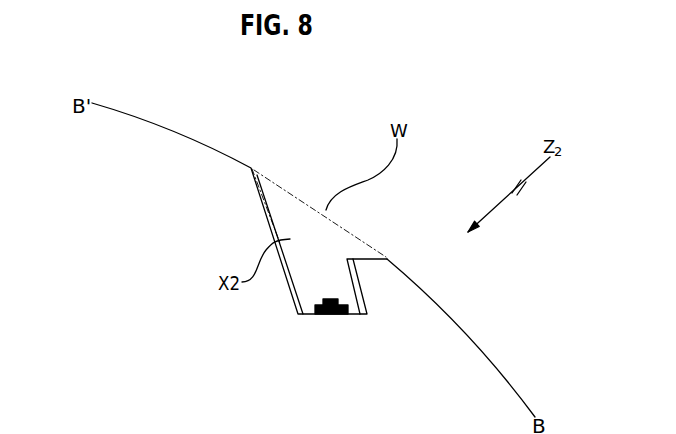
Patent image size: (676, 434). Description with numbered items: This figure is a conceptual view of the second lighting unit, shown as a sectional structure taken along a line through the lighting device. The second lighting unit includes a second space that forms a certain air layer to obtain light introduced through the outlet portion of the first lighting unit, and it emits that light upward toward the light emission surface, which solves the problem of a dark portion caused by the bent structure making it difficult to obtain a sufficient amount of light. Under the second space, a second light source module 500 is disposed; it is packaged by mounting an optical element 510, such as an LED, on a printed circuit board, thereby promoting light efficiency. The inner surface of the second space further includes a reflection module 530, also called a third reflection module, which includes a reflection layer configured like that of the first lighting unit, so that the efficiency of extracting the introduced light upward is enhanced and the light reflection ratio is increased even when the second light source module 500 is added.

The second light source module 500 is at (309, 344).
The optical element 510 is at (318, 301).
The reflection module 530 is at (361, 287).